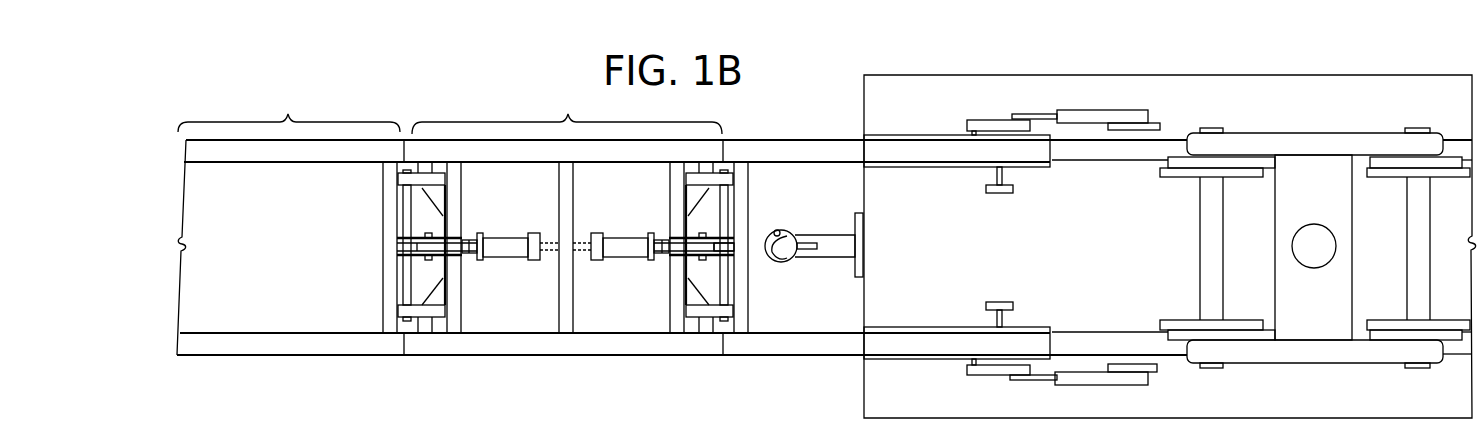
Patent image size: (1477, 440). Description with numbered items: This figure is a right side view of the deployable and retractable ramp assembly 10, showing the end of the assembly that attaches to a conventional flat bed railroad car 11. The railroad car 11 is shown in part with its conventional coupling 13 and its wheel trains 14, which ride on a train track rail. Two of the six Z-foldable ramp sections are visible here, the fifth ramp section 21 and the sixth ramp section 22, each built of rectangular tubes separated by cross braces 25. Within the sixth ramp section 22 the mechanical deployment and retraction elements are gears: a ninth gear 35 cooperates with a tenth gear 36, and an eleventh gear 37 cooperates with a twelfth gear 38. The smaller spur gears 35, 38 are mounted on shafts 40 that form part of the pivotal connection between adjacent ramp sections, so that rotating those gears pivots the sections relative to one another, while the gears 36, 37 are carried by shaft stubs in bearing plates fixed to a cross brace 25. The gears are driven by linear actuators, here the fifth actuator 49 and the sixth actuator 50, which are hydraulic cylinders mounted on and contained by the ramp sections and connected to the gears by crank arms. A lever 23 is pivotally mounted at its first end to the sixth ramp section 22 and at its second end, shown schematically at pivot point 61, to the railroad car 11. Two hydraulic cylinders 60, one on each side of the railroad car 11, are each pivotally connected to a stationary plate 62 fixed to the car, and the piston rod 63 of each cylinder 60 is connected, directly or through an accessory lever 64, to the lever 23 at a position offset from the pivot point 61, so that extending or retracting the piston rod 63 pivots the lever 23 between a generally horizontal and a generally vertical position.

The ramp assembly 10 is at (814, 66).
The railroad car 11 is at (1292, 66).
The coupling 13 is at (781, 263).
The wheel trains 14 is at (1369, 91).
The fifth ramp section 21 is at (289, 109).
The sixth ramp section 22 is at (567, 111).
The lever 23 is at (820, 150).
The cross braces 25 is at (390, 197).
The ninth gear 35 is at (396, 247).
The tenth gear 36 is at (462, 241).
The eleventh gear 37 is at (693, 247).
The twelfth gear 38 is at (730, 245).
The shafts 40 is at (400, 287).
The fifth actuator 49 is at (505, 258).
The sixth actuator 50 is at (618, 258).
The hydraulic cylinders 60 is at (1082, 110).
The pivot point 61 is at (992, 198).
The plate 62 is at (1160, 123).
The piston rod 63 is at (1030, 114).
The accessory lever 64 is at (993, 120).